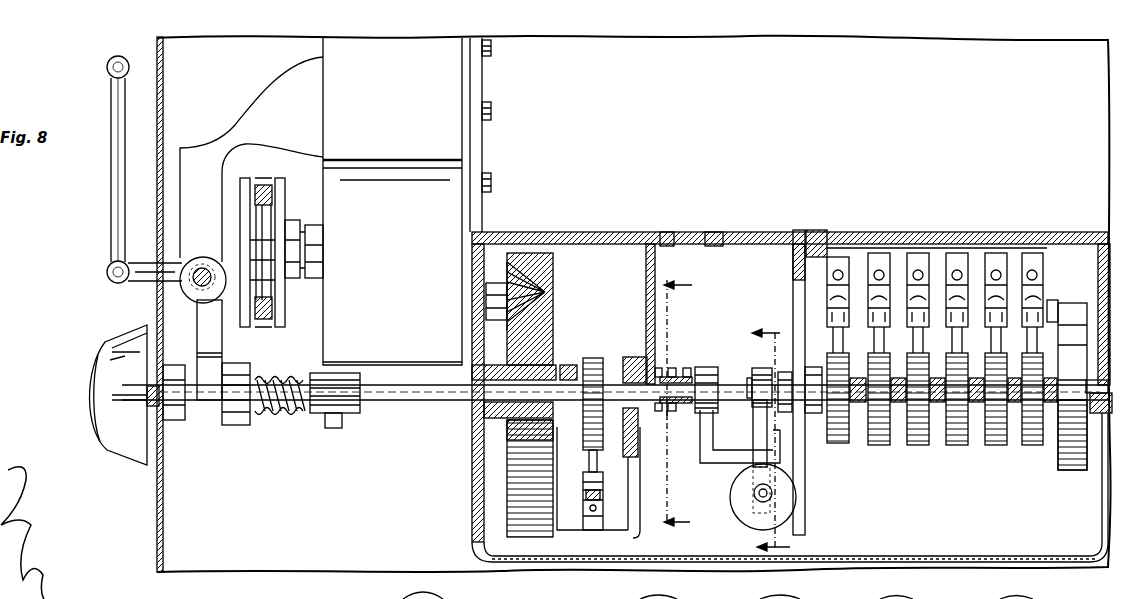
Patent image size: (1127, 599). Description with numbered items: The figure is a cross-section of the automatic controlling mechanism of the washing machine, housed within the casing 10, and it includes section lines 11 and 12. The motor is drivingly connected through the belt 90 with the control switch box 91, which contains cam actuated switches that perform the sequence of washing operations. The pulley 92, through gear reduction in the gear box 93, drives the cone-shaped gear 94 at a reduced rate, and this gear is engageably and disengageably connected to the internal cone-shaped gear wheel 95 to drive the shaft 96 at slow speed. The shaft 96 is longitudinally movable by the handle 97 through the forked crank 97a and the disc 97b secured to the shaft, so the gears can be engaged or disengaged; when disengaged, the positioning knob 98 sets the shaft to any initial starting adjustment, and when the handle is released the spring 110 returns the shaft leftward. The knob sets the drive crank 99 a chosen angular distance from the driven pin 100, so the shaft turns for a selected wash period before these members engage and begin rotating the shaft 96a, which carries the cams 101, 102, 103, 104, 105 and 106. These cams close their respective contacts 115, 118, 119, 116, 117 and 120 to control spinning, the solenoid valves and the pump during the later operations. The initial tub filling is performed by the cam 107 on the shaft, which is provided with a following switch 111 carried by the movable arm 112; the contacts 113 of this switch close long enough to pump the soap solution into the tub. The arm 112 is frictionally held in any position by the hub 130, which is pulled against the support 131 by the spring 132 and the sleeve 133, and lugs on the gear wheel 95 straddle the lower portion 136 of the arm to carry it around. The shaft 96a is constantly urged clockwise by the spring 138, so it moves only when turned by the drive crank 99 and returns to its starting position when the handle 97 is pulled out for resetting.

The casing 10 is at (830, 195).
The section line 11- 11 is at (689, 406).
The section line 12- 12 is at (783, 435).
The belt 90 is at (259, 180).
The control switch box 91 is at (585, 128).
The pulley 92 is at (288, 218).
The gear box 93 is at (445, 216).
The cone-shaped gear 94 is at (520, 308).
The internal cone-shaped gear wheel 95 is at (556, 268).
The shaft 96 is at (425, 404).
The shaft 96a is at (753, 366).
The handle 97 is at (108, 208).
The forked crank 97a is at (209, 405).
The disc 97b is at (235, 428).
The positioning knob 98 is at (122, 468).
The drive crank 99 is at (719, 455).
The driven pin 100 is at (752, 434).
The cam 101 is at (838, 445).
The cam 102 is at (879, 447).
The cam 103 is at (918, 447).
The cam 104 is at (957, 447).
The cam 105 is at (996, 447).
The cam 106 is at (1033, 447).
The cam 107 is at (592, 358).
The spring 110 is at (279, 416).
The following switch 111 is at (599, 471).
The movable arm 112 is at (622, 538).
The contacts 113 is at (584, 493).
The contacts 115 is at (848, 292).
The switch 116 is at (966, 287).
The switch 117 is at (1004, 290).
The contacts 118 is at (888, 287).
The contacts 119 is at (927, 287).
The contacts 120 is at (1036, 291).
The hub 130 is at (636, 356).
The support 131 is at (646, 295).
The spring 132 is at (668, 372).
The sleeve 133 is at (682, 420).
The lower portion 136 is at (560, 531).
The spring 138 is at (1068, 472).